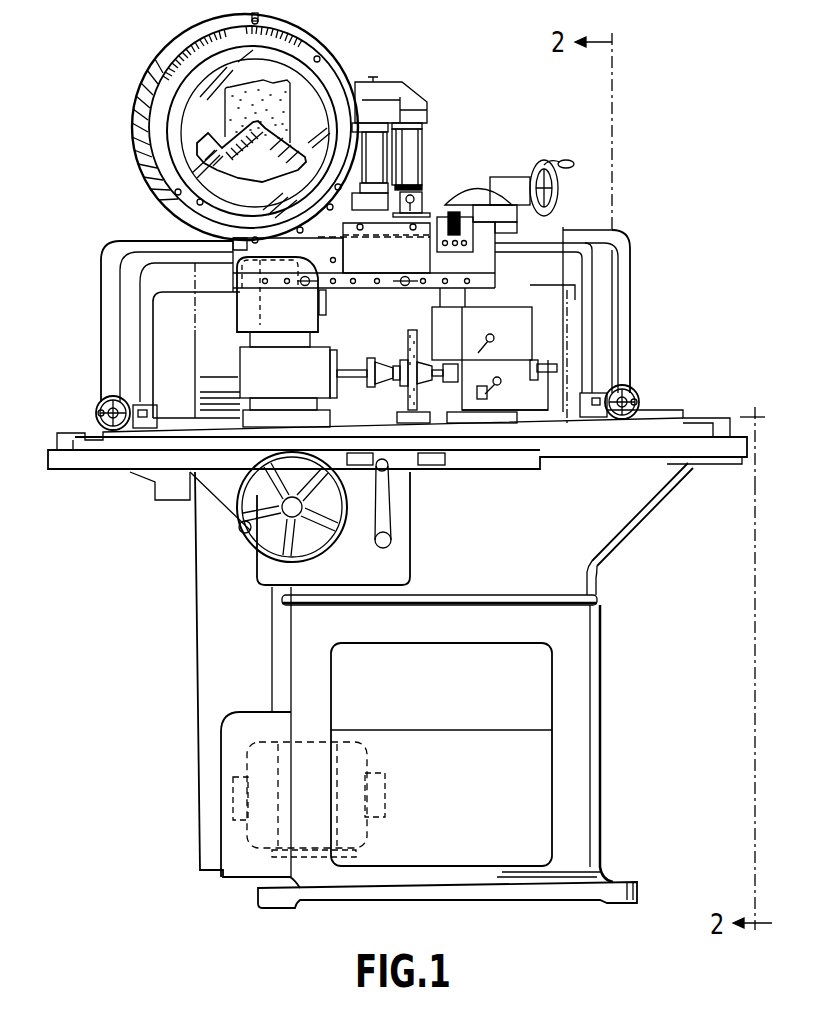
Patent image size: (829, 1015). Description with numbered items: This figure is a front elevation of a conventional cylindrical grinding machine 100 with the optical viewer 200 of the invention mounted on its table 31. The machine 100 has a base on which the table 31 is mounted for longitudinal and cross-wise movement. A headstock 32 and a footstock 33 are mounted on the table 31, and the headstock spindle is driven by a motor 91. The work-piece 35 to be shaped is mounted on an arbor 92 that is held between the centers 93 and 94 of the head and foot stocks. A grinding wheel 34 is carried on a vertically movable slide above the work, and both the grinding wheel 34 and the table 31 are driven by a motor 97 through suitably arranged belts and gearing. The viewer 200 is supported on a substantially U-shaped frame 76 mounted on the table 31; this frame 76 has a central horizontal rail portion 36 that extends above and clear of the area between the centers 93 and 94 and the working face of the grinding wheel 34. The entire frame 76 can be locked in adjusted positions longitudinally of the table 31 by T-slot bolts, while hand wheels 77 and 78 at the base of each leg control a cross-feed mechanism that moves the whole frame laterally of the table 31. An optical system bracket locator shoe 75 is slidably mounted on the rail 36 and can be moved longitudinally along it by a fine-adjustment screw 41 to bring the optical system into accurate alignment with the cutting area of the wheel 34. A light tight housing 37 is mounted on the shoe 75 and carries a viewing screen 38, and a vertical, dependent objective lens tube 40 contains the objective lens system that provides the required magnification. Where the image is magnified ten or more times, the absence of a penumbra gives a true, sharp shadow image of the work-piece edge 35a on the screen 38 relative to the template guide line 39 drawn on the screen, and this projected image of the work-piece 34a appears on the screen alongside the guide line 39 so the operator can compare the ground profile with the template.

The table 31 is at (663, 410).
The headstock 32 is at (325, 344).
The footstock 33 is at (463, 363).
The grinding wheel 34 is at (420, 336).
The projected image of workpiece 34a is at (277, 97).
The work-piece 35 is at (395, 345).
The work-piece edge 35a is at (240, 132).
The central horizontal rail portion 36 is at (547, 252).
The light tight housing 37 is at (320, 42).
The viewing screen 38 is at (188, 103).
The template guide line 39 is at (290, 172).
The objective lens tube 40 is at (422, 147).
The fine-adjustment screw 41 is at (460, 211).
The optical system bracket locator shoe 75 is at (407, 247).
The U-shaped frame 76 is at (635, 298).
The hand wheel 77 is at (100, 402).
The hand wheel 78 is at (637, 397).
The motor 91 is at (250, 318).
The arbor 92 is at (364, 380).
The center 93 is at (354, 371).
The center 94 is at (455, 373).
The motor 97 is at (365, 760).
The cylindrical grinding machine 100 is at (188, 577).
The optical viewer 200 is at (350, 64).